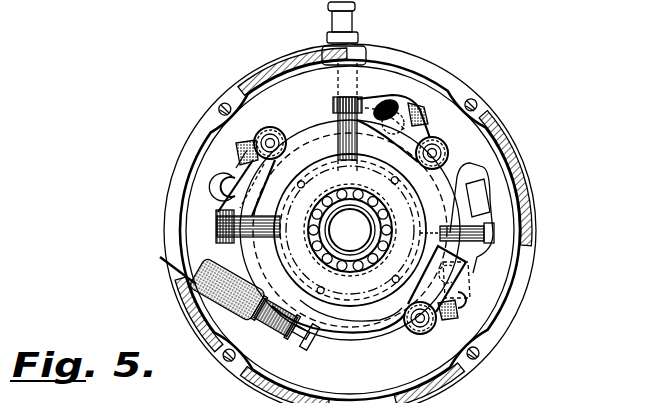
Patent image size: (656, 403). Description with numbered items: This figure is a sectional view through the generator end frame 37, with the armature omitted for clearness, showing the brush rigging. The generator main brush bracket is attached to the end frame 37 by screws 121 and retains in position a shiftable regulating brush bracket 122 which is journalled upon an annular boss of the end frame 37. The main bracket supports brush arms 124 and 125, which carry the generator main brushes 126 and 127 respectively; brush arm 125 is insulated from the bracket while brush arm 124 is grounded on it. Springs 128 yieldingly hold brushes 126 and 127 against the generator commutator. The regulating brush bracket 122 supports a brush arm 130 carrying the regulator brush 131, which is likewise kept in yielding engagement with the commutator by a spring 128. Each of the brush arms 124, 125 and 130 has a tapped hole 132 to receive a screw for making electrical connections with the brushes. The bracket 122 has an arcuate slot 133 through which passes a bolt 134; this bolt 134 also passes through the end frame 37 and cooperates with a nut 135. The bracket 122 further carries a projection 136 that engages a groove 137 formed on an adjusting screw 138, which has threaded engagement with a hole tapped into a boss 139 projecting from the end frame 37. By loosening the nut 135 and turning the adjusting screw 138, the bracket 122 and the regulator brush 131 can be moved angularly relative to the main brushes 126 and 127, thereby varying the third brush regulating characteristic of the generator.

The end frame 37 is at (492, 128).
The screws 121 is at (288, 146).
The regulating brush bracket 122 is at (458, 290).
The brush arm 124 is at (240, 152).
The brush arm 125 is at (416, 112).
The generator main brush 126 is at (218, 222).
The generator main brush 127 is at (353, 98).
The springs 128 is at (222, 182).
The brush arm 130 is at (461, 299).
The regulator brush 131 is at (451, 230).
The tapped hole 132 is at (238, 152).
The arcuate slot 133 is at (476, 190).
The bolt 134 is at (484, 229).
The nut 135 is at (494, 233).
The projection 136 is at (327, 340).
The groove 137 is at (287, 350).
The adjusting screw 138 is at (249, 330).
The boss 139 is at (176, 274).